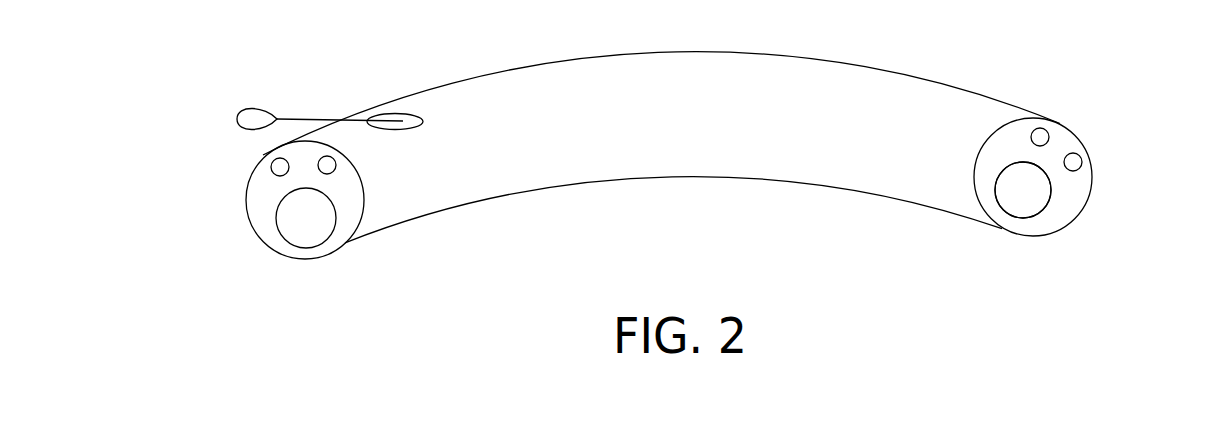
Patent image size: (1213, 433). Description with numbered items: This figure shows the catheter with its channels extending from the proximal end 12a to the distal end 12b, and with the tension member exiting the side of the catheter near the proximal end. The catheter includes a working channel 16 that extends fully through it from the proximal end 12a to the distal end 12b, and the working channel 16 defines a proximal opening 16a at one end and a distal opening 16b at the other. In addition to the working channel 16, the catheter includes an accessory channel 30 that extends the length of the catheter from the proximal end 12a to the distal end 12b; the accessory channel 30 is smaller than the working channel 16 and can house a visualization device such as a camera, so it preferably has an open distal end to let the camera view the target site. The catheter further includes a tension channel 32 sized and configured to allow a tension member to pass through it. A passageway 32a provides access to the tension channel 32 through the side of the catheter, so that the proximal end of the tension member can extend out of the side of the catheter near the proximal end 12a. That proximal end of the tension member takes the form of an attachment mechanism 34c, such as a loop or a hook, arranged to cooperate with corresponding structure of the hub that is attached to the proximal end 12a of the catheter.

The proximal end 12a is at (358, 110).
The distal end 12b is at (975, 92).
The working channel 16 is at (1045, 210).
The proximal opening 16a is at (302, 223).
The distal opening 16b is at (1015, 198).
The accessory channel 30 is at (1048, 135).
The tension channel 32 is at (1083, 162).
The passageway 32a is at (403, 115).
The attachment mechanism 34c is at (253, 108).